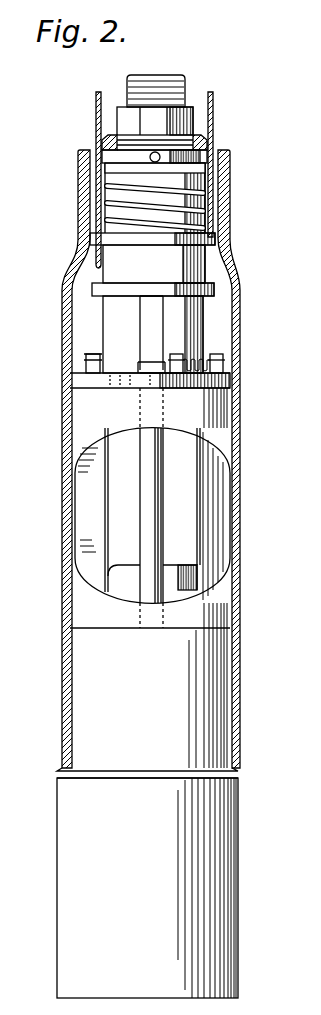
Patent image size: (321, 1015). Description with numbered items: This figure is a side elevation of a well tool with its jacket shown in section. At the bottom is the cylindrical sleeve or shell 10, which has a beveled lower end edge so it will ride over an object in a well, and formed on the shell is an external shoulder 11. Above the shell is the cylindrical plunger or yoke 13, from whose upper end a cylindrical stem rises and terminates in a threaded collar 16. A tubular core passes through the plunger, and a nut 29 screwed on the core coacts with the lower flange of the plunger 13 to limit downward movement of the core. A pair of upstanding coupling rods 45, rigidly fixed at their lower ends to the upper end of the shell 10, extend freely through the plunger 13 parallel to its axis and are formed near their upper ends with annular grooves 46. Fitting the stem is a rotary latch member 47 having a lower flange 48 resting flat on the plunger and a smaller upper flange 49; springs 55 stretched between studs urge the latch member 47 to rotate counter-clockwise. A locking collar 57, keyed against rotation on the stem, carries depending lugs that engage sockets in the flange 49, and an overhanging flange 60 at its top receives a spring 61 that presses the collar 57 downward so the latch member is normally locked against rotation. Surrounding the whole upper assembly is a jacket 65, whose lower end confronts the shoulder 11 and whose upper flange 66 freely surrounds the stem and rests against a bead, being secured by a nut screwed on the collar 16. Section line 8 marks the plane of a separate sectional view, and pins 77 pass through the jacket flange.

The section line 8- 8 is at (284, 160).
The cylindrical sleeve or shell 10 is at (147, 744).
The external shoulder 11 is at (126, 773).
The cylindrical plunger or yoke 13 is at (215, 412).
The threaded collar 16 is at (199, 137).
The nut 29 is at (186, 579).
The coupling rods 45 is at (160, 502).
The annular channels or grooves 46 is at (157, 360).
The rotary latch member 47 is at (204, 334).
The flange 48 is at (231, 383).
The smaller flange 49 is at (216, 289).
The springs 55 is at (225, 361).
The locking collar 57 is at (154, 264).
The overhanging flange 60 is at (218, 240).
The spring 61 is at (207, 210).
The jacket 65 is at (240, 430).
The flange 66 is at (214, 156).
The pin 77 is at (213, 136).